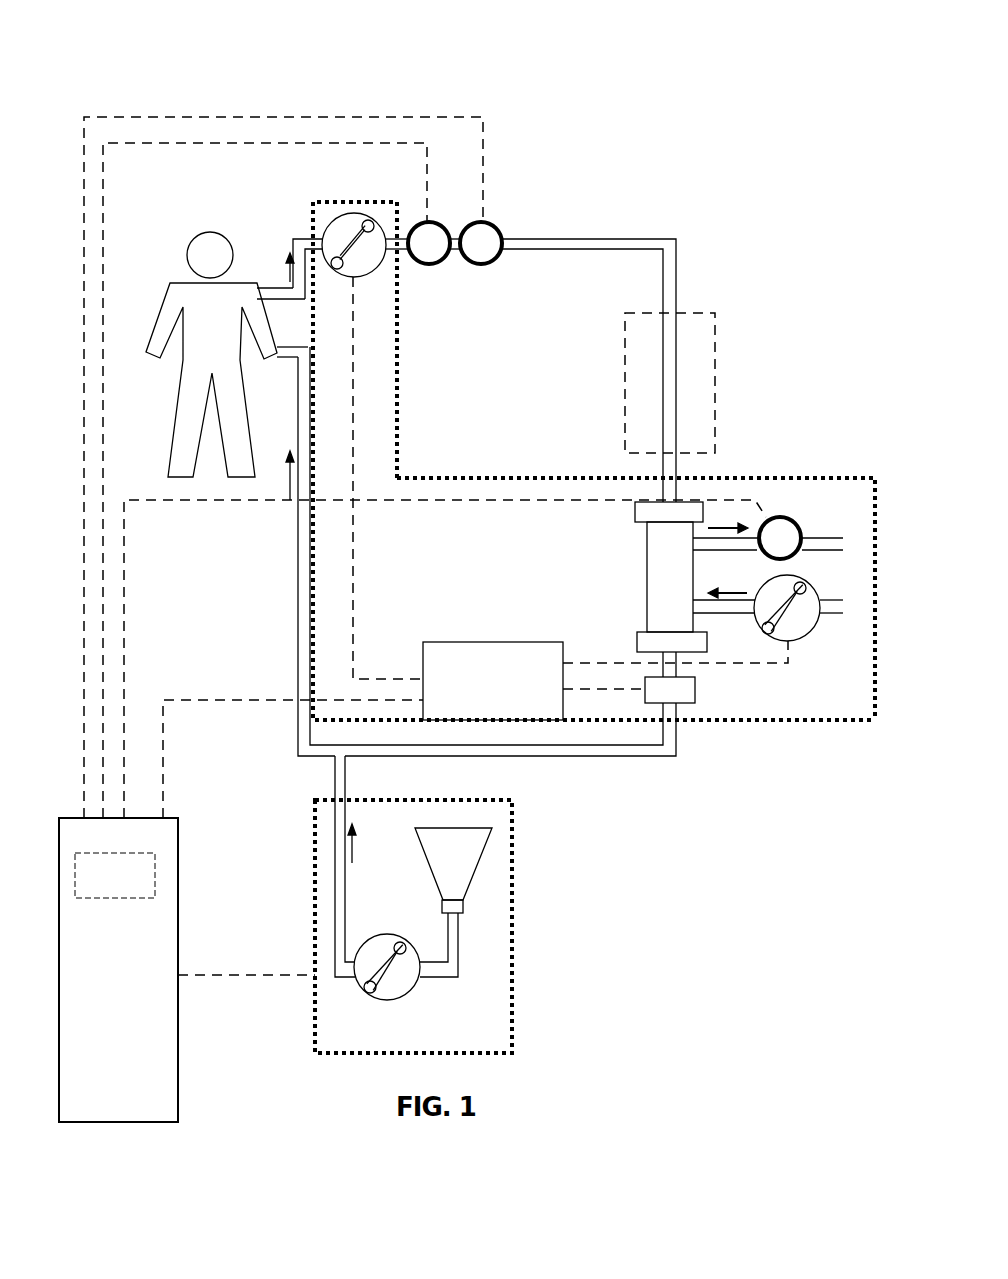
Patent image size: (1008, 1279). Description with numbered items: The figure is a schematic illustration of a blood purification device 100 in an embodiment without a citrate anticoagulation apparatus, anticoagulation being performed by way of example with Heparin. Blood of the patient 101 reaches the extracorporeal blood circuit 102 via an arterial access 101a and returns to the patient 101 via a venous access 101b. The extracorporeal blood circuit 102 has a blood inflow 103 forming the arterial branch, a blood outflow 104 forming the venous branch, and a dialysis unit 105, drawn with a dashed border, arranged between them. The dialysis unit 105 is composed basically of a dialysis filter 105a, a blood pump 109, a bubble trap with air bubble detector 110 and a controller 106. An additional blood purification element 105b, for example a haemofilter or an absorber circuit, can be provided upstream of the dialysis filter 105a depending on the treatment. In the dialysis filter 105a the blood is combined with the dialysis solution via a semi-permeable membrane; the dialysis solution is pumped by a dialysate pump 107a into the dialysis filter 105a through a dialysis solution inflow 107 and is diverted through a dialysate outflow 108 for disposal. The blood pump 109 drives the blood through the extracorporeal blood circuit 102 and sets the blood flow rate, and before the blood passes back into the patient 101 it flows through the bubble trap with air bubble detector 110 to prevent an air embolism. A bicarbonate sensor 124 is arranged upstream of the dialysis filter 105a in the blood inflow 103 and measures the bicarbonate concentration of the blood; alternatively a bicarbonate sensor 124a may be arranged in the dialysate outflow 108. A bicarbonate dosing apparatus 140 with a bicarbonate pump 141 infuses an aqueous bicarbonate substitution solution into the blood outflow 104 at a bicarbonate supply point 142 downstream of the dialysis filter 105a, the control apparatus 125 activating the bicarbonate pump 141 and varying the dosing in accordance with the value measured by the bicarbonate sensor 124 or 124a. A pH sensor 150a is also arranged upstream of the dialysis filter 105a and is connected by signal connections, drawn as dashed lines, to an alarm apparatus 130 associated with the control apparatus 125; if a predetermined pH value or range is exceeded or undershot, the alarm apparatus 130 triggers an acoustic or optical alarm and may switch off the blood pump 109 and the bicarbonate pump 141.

The blood purification device 100 is at (440, 100).
The patient 101 is at (188, 345).
The arterial access 101a is at (263, 286).
The venous access 101b is at (278, 358).
The extracorporeal blood circuit 102 is at (492, 332).
The blood inflow 103 is at (297, 238).
The blood outflow 104 is at (301, 625).
The dialysis unit 105 is at (820, 476).
The dialysis filter 105a is at (650, 577).
The additional blood purification element 105b is at (715, 383).
The controller 106 is at (470, 695).
The dialysis solution inflow 107 is at (838, 610).
The dialysate pump 107a is at (806, 604).
The dialysate outflow 108 is at (826, 545).
The blood pump 109 is at (352, 222).
The bubble trap with air bubble detector 110 is at (697, 690).
The bicarbonate sensor 124 is at (486, 238).
The bicarbonate sensor 124a is at (790, 534).
The control apparatus 125 is at (84, 974).
The alarm apparatus 130 is at (92, 891).
The bicarbonate dosing apparatus 140 is at (315, 880).
The bicarbonate pump 141 is at (405, 985).
The bicarbonate supply point 142 is at (337, 758).
The pH sensor 150a is at (437, 264).